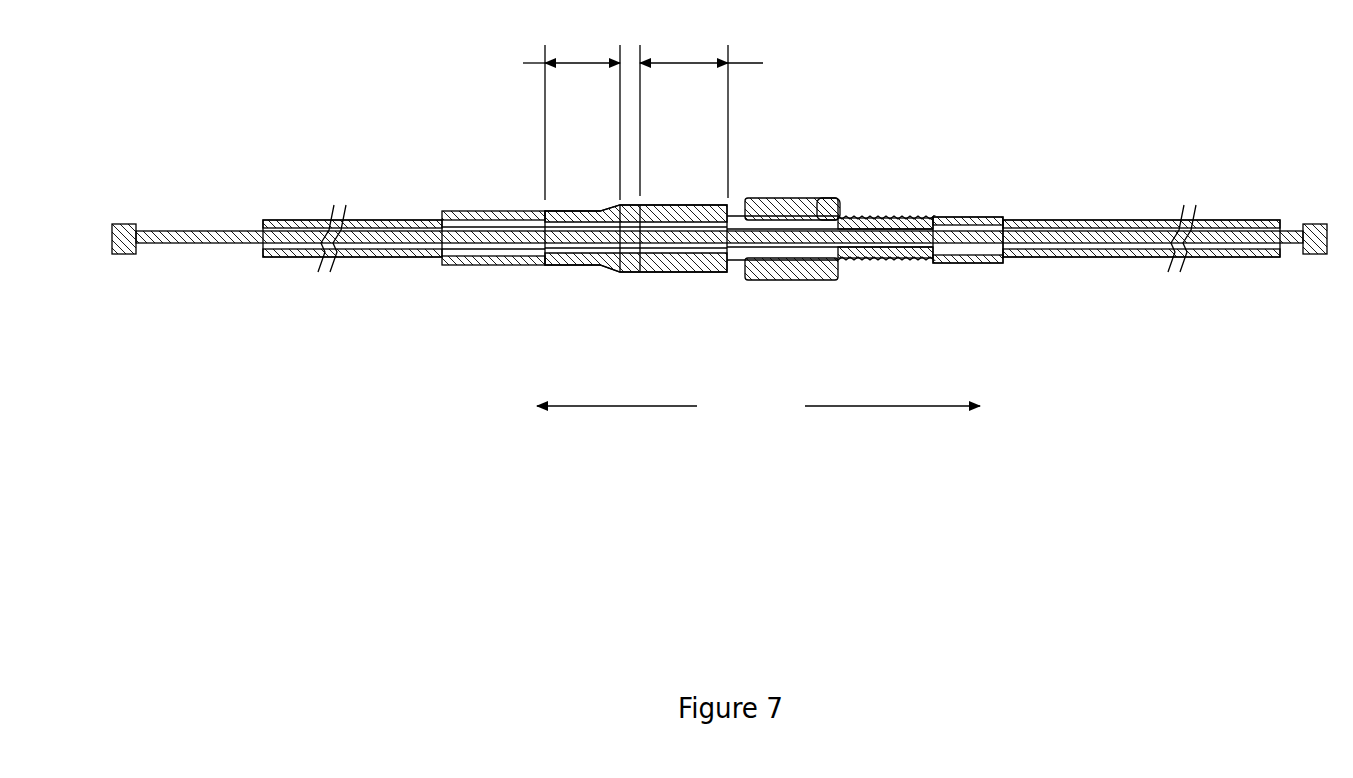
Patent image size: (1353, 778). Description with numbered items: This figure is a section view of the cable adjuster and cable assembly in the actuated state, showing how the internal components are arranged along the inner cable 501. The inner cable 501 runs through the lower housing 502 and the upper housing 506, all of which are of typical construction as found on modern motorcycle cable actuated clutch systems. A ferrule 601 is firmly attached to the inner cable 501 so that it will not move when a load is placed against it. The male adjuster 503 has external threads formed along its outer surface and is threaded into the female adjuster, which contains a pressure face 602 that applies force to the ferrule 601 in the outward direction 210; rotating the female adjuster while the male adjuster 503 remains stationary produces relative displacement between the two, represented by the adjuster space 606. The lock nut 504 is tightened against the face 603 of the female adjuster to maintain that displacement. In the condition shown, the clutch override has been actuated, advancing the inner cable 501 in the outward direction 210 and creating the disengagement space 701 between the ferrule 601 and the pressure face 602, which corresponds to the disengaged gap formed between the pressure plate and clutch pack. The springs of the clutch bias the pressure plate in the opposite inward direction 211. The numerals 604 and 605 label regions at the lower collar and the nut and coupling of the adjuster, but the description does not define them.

The inner cable 501 is at (1257, 237).
The lower housing 502 is at (1087, 224).
The male adjuster 503 is at (888, 219).
The lock nut 504 is at (827, 206).
The upper housing 506 is at (390, 224).
The ferrule 601 is at (521, 212).
The pressure face 602 is at (628, 253).
The face 603 is at (809, 283).
The lower collar 604 is at (502, 266).
The nut / coupling 605 is at (761, 208).
The adjuster space 606 is at (723, 121).
The disengagement space 701 is at (549, 122).
The outward direction 210 is at (635, 407).
The inward direction 211 is at (872, 407).